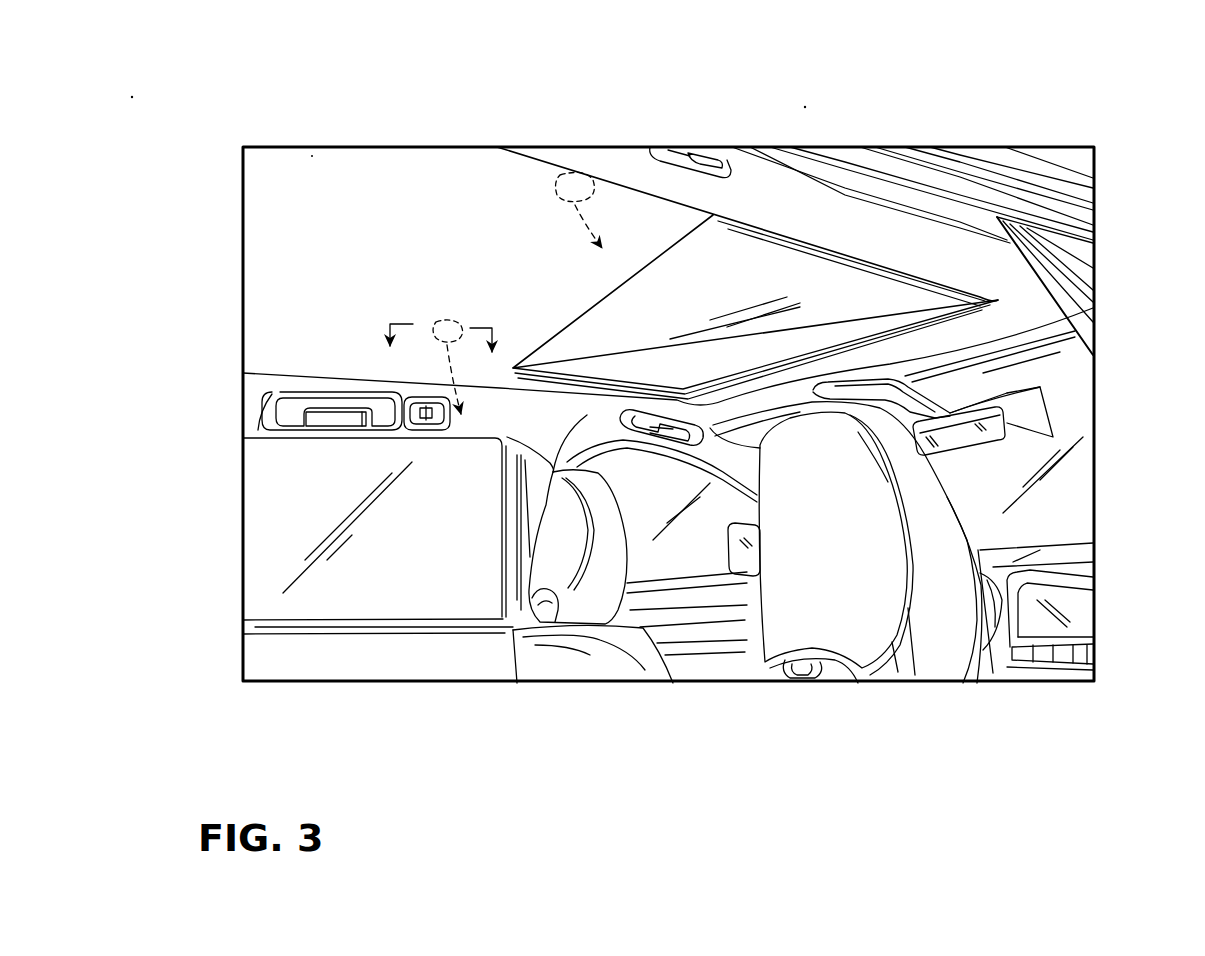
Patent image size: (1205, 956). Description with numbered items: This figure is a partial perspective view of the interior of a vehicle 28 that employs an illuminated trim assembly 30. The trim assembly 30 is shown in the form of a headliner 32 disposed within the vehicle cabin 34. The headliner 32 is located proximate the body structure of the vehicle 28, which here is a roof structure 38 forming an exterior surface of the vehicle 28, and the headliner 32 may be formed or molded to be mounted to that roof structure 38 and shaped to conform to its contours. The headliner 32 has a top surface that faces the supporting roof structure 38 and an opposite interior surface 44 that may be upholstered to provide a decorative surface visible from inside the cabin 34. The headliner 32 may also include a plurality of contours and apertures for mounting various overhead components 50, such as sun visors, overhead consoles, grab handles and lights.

The vehicle 28 is at (985, 126).
The illuminated trim assembly 30 is at (341, 184).
The headliner 32 is at (520, 222).
The vehicle cabin 34 is at (424, 630).
The roof structure 38 is at (1027, 166).
The interior surface 44 is at (300, 262).
The overhead components 50 is at (586, 172).